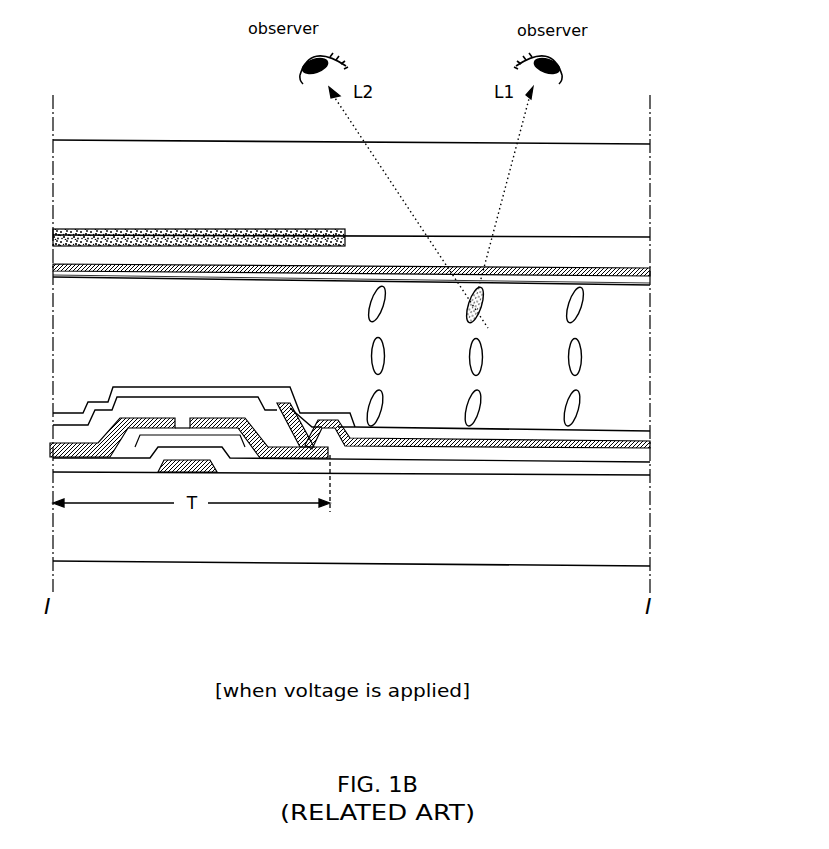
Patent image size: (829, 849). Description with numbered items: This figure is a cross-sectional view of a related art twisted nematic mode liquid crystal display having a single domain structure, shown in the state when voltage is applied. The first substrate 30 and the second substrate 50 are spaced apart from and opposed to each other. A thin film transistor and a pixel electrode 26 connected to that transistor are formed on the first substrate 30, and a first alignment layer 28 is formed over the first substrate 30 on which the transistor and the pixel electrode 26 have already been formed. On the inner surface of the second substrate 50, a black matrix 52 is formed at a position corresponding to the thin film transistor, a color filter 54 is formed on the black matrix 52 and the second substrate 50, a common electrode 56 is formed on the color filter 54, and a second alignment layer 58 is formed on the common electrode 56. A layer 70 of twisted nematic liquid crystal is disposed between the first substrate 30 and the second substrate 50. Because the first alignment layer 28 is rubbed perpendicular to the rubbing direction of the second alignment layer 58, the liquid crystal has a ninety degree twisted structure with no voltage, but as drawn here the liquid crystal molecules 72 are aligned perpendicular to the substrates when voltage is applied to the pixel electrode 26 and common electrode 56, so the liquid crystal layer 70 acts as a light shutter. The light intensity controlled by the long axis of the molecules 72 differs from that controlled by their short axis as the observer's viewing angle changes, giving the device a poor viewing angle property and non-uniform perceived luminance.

The second substrate 50 is at (79, 193).
The black matrix 52 is at (198, 247).
The color filter 54 is at (157, 256).
The common electrode 56 is at (120, 271).
The second alignment layer 58 is at (83, 275).
The liquid crystal layer 70 is at (650, 288).
The liquid crystal molecules 72 is at (575, 308).
The first alignment layer 28 is at (398, 433).
The pixel electrode 26 is at (503, 447).
The first substrate 30 is at (78, 541).